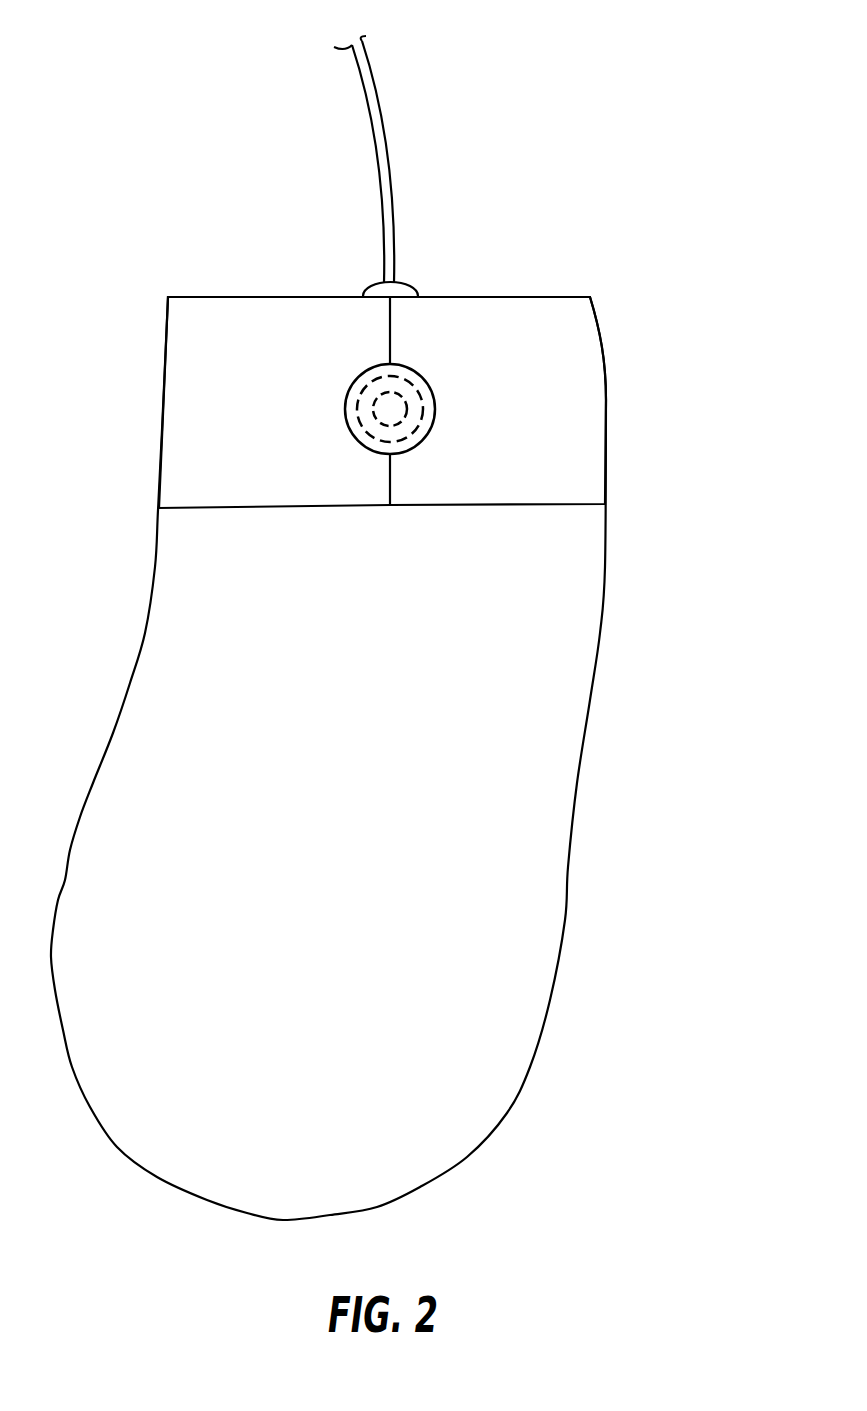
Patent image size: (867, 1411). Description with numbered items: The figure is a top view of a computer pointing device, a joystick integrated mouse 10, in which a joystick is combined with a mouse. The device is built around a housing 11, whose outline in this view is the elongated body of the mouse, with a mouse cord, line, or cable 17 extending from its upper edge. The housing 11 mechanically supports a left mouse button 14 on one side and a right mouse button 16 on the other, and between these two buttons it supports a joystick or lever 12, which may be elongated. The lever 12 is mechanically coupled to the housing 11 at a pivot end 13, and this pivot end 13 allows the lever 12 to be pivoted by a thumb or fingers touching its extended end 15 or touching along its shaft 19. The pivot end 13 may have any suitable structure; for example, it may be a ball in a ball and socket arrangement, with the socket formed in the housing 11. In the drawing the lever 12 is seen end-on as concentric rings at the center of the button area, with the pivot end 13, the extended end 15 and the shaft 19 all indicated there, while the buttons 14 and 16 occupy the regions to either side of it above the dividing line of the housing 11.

The joystick integrated mouse 10 is at (665, 109).
The housing 11 is at (361, 758).
The lever 12 is at (442, 347).
The pivot end 13 is at (485, 350).
The left mouse button 14 is at (231, 402).
The extended end 15 is at (535, 403).
The right mouse button 16 is at (546, 401).
The cable 17 is at (413, 166).
The shaft 19 is at (303, 335).